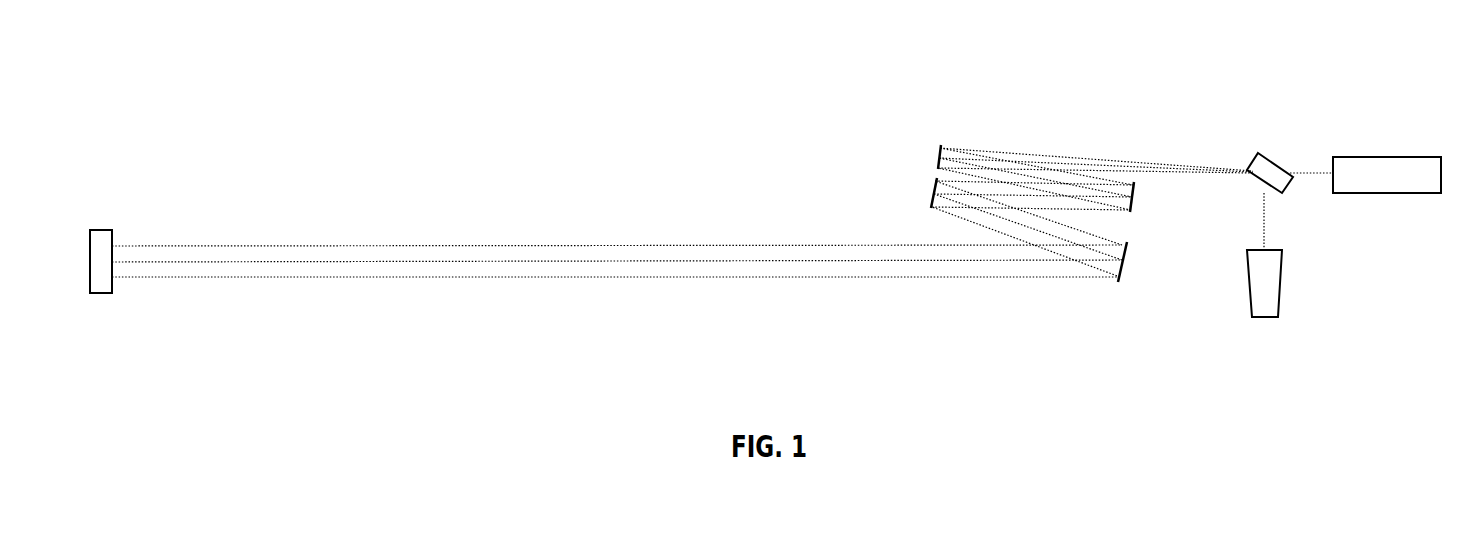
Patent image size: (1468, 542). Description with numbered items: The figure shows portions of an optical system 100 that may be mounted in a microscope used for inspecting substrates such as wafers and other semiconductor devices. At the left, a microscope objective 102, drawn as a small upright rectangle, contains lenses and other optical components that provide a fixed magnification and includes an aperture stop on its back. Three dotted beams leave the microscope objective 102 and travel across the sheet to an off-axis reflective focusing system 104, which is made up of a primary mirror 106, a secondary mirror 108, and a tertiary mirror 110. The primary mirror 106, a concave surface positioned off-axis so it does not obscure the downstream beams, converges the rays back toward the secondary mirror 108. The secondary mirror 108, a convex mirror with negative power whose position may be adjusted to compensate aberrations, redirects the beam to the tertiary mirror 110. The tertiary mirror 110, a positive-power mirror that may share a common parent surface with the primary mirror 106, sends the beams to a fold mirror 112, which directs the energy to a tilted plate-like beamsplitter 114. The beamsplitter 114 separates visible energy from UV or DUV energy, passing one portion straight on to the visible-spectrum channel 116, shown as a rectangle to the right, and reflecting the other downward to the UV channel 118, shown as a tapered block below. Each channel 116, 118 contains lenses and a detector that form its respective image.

The optical system 100 is at (1385, 55).
The microscope objective 102 is at (100, 229).
The off-axis reflective focusing system 104 is at (1025, 296).
The primary mirror 106 is at (1122, 270).
The secondary mirror 108 is at (933, 191).
The tertiary mirror 110 is at (1132, 201).
The fold mirror 112 is at (939, 153).
The beamsplitter 114 is at (1275, 162).
The visible-spectrum channel 116 is at (1389, 157).
The UV channel 118 is at (1283, 283).